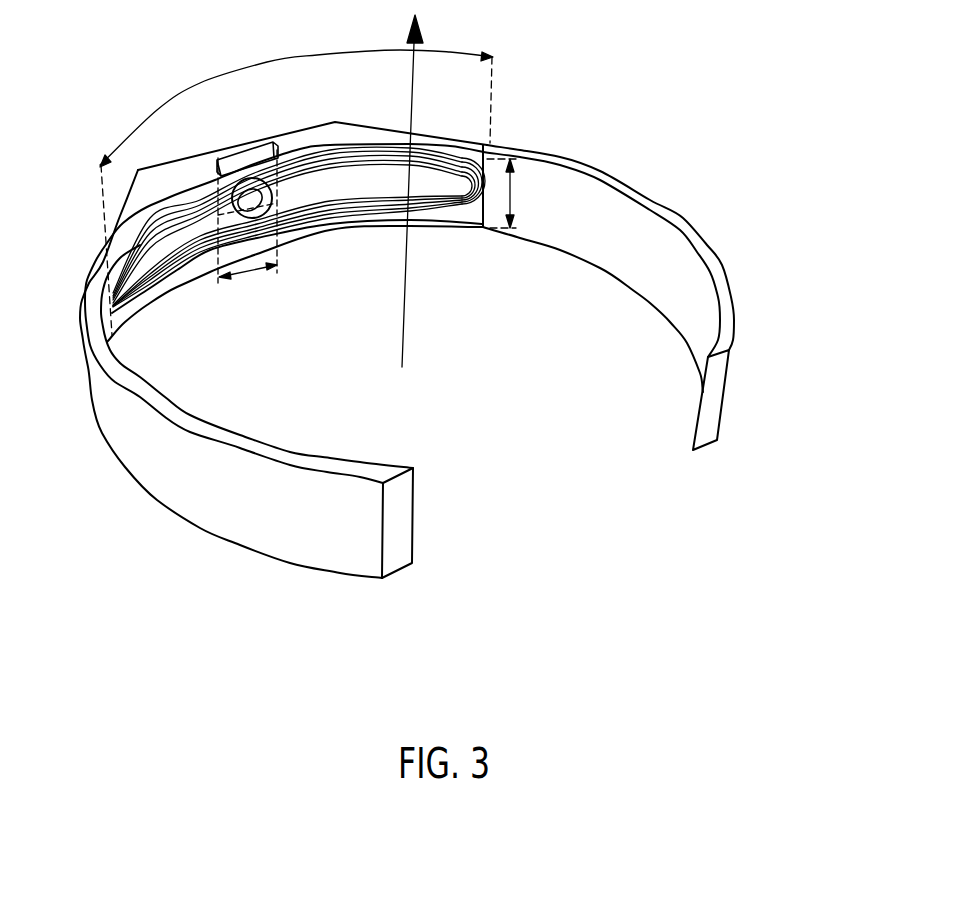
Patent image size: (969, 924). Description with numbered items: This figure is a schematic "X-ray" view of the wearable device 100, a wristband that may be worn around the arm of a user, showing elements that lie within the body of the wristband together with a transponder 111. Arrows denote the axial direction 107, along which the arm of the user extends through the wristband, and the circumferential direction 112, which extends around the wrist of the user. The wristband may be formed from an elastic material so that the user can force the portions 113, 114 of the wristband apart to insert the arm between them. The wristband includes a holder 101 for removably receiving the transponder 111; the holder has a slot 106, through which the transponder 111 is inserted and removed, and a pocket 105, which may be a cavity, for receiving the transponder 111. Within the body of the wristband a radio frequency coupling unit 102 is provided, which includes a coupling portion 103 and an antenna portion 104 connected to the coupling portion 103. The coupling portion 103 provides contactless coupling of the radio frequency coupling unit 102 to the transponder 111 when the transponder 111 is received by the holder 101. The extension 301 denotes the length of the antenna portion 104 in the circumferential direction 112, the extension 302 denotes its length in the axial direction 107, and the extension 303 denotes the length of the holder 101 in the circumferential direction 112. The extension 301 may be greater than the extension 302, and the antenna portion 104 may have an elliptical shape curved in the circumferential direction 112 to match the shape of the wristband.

The wearable device 100 is at (672, 131).
The holder 101 is at (89, 94).
The radio frequency coupling unit 102 is at (443, 230).
The coupling portion 103 is at (305, 228).
The antenna portion 104 is at (360, 212).
The pocket 105 is at (327, 157).
The slot 106 is at (247, 152).
The axial direction 107 is at (415, 85).
The transponder 111 is at (203, 263).
The circumferential direction 112 is at (200, 147).
The portion of the wristband 113 is at (327, 550).
The portion of the wristband 114 is at (725, 327).
The extension of the antenna portion in the circumferential direction 301 is at (180, 97).
The extension of the antenna portion in the axial direction 302 is at (513, 197).
The extension of the holder in the circumferential direction 303 is at (246, 277).